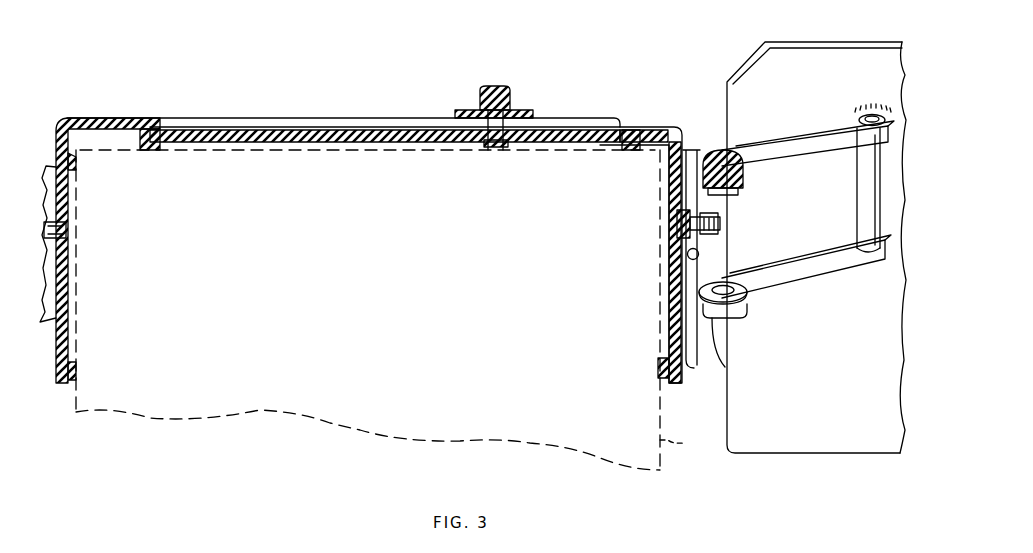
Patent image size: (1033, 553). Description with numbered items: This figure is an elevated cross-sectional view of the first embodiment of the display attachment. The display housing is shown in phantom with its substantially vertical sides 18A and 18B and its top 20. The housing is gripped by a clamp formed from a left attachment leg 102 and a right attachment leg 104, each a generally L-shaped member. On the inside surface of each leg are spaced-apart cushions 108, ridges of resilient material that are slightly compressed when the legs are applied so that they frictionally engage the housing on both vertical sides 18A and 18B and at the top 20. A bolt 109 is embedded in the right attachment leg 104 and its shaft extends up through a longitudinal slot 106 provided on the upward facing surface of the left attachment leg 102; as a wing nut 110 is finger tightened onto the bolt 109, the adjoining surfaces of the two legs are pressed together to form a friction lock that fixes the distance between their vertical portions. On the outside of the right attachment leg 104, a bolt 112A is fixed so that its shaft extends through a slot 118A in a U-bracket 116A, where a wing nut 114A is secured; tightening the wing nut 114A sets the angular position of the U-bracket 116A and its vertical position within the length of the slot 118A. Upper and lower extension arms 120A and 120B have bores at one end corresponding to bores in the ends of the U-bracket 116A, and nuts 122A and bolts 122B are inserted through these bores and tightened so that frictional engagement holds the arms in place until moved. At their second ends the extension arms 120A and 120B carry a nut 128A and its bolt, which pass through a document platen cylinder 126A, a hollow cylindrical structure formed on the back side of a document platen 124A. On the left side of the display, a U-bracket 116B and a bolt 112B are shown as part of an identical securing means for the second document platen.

The vertical side 18A is at (688, 444).
The vertical side 18B is at (76, 412).
The top 20 is at (340, 152).
The left attachment leg 102 is at (128, 118).
The right attachment leg 104 is at (640, 122).
The longitudinal slot 106 is at (290, 120).
The cushions 108 is at (72, 165).
The bolt 109 is at (490, 148).
The wing nut 110 is at (505, 90).
The bolt 112A is at (682, 224).
The bolt 112B is at (68, 229).
The wing nut 114A is at (720, 223).
The U-bracket 116A is at (726, 369).
The U-bracket 116B is at (45, 165).
The slot 118A is at (700, 258).
The upper extension arm 120A is at (805, 161).
The lower extension arm 120B is at (794, 284).
The nuts 122A is at (728, 150).
The bolts 122B is at (734, 192).
The document platen 124A is at (850, 397).
The document platen cylinder 126A is at (858, 206).
The nut 128A is at (871, 116).